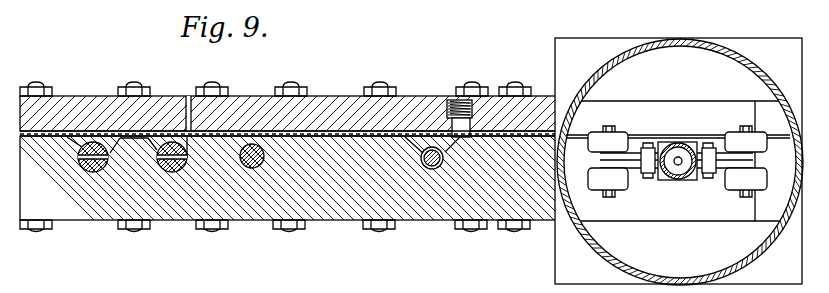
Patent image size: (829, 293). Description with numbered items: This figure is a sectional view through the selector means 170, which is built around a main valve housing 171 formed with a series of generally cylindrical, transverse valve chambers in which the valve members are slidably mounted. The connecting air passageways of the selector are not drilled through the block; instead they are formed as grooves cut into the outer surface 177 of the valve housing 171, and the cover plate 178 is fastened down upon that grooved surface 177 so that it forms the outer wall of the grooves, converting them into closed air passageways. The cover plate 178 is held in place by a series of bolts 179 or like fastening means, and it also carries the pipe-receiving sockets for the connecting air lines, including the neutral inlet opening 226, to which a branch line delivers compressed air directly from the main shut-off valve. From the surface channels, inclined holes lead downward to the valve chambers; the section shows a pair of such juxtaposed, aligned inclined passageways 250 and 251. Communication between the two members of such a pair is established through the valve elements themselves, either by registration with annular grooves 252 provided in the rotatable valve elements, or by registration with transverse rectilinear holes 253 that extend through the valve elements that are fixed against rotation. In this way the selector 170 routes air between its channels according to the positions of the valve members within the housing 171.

The selector means 170 is at (288, 206).
The main valve housing 171 is at (277, 188).
The outer surface 177 is at (353, 140).
The cover plate 178 is at (320, 113).
The bolts 179 is at (33, 88).
The neutral inlet opening 226 is at (455, 100).
The inclined passageway 250 is at (414, 166).
The inclined passageway 251 is at (455, 145).
The annular grooves 252 is at (437, 167).
The transverse rectilinear holes 253 is at (173, 172).